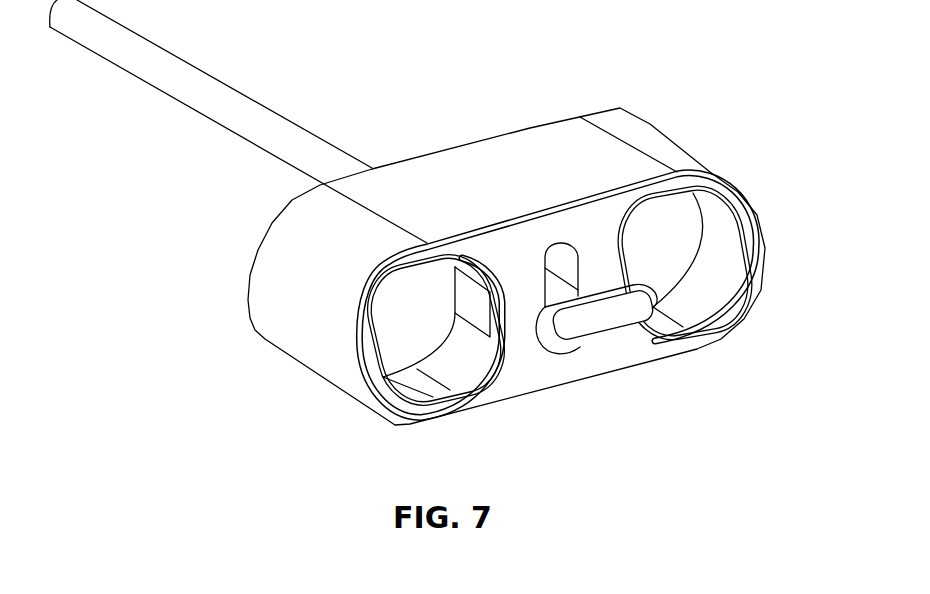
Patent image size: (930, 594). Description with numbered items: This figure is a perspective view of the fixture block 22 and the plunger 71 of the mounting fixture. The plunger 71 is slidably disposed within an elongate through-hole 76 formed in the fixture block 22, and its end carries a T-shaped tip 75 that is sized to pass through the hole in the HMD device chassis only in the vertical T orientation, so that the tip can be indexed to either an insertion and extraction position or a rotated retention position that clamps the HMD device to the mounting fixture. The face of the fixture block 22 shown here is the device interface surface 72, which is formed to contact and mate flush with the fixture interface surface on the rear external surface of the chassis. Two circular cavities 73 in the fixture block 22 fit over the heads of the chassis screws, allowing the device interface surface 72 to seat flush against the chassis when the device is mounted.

The fixture block 22 is at (692, 115).
The plunger 71 is at (267, 107).
The device interface surface 72 is at (653, 358).
The circular cavities 73 is at (735, 287).
The T-shaped tip 75 is at (573, 335).
The elongate through-hole 76 is at (562, 243).